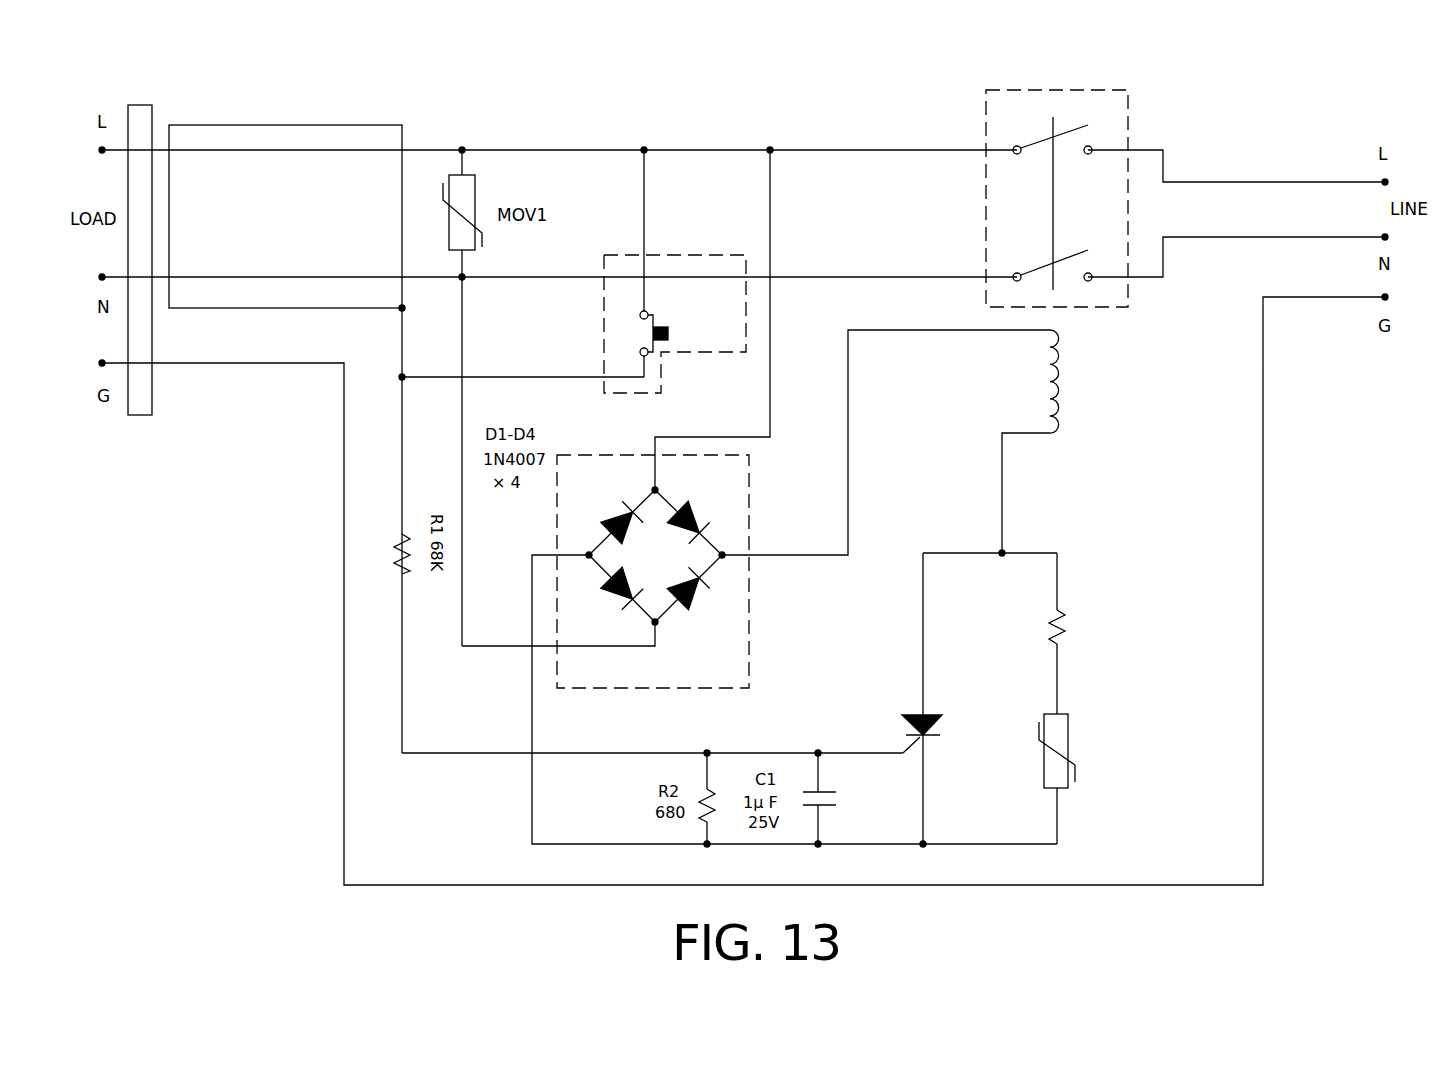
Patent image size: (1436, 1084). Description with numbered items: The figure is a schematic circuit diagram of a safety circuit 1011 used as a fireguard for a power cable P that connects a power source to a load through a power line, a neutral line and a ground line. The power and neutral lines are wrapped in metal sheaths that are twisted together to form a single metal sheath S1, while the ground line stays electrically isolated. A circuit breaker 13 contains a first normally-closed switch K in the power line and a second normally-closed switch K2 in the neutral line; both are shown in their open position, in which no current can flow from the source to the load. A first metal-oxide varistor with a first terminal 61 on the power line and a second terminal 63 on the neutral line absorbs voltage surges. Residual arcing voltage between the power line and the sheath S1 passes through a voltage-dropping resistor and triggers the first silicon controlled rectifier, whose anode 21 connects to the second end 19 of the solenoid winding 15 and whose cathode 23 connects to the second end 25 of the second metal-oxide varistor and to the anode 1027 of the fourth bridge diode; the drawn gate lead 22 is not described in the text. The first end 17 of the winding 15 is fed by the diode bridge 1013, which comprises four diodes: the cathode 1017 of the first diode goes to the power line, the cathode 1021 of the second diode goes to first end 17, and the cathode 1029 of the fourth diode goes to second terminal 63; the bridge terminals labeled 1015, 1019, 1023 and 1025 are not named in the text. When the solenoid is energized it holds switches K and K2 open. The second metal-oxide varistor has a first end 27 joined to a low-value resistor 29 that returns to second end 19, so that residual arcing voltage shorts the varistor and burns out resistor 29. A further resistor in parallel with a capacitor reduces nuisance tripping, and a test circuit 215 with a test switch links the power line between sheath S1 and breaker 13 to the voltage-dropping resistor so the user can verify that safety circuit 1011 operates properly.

The power cable P is at (140, 100).
The metal sheath S1 is at (258, 125).
The first terminal 61 is at (480, 137).
The second terminal 63 is at (480, 291).
The test circuit 215 is at (673, 255).
The circuit breaker 13 is at (1051, 174).
The first normally-closed switch K is at (1050, 128).
The second normally-closed switch K2 is at (1050, 262).
The first end 17 is at (993, 333).
The winding 15 is at (1063, 410).
The second end 19 is at (1020, 540).
The resistor 29 is at (1062, 612).
The MOV2 first end 27 is at (1089, 736).
The MOV2 second end 25 is at (1075, 816).
The anode 21 is at (935, 715).
The SCR gate 22 is at (910, 745).
The cathode 23 is at (927, 775).
The safety circuit 1011 is at (310, 840).
The diode bridge 1013 is at (749, 660).
The diode D91 1015 is at (600, 543).
The cathode 1017 is at (645, 487).
The bridge input conductor 1019 is at (663, 487).
The cathode 1021 is at (700, 535).
The bridge bottom node 1023 is at (668, 612).
The diode D93 1025 is at (710, 568).
The anode 1027 is at (600, 572).
The cathode 1029 is at (640, 617).